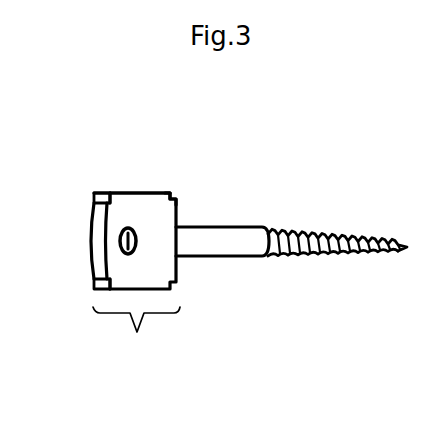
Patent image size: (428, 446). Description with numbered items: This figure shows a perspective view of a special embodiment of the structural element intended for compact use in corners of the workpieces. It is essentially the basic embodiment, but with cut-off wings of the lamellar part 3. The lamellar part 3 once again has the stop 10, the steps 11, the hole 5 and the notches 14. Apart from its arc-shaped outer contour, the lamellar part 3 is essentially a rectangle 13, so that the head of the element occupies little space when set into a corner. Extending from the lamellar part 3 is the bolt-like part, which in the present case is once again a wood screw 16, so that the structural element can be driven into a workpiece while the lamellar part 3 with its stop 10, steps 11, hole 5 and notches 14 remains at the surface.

The lamellar part 3 is at (136, 337).
The hole 5 is at (122, 239).
The stop 10 is at (176, 215).
The steps 11 is at (173, 193).
The rectangle 13 is at (142, 192).
The notches 14 is at (93, 199).
The wood screw 16 is at (328, 232).